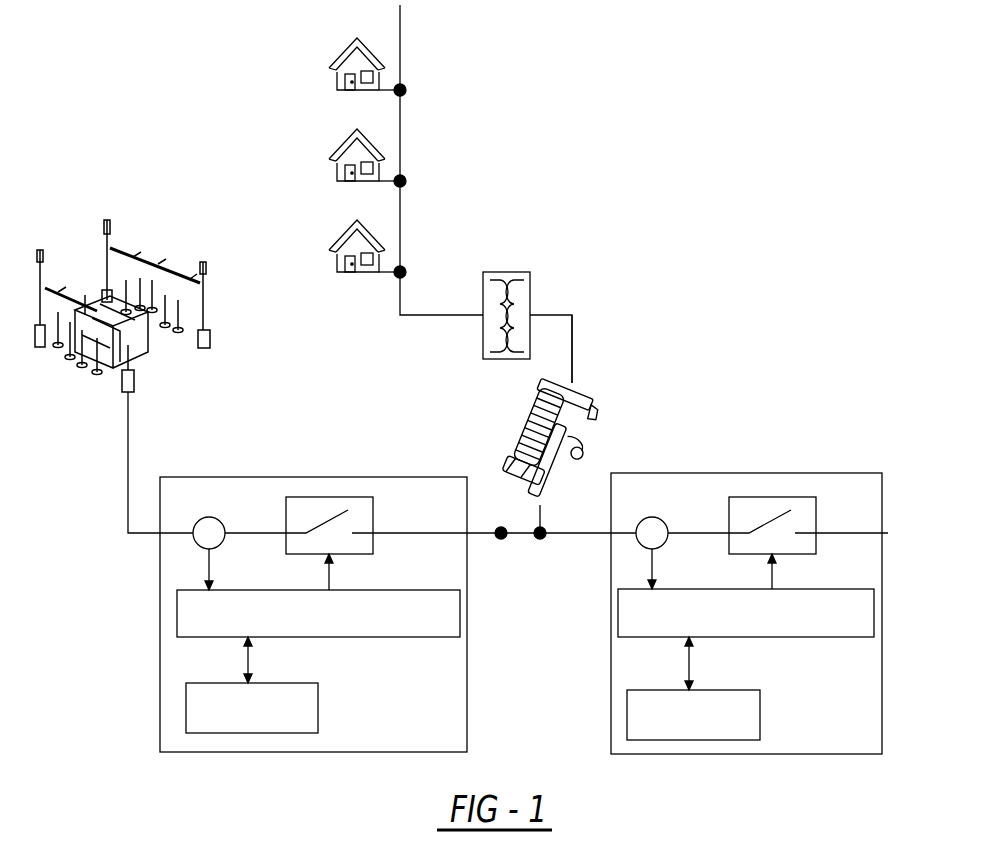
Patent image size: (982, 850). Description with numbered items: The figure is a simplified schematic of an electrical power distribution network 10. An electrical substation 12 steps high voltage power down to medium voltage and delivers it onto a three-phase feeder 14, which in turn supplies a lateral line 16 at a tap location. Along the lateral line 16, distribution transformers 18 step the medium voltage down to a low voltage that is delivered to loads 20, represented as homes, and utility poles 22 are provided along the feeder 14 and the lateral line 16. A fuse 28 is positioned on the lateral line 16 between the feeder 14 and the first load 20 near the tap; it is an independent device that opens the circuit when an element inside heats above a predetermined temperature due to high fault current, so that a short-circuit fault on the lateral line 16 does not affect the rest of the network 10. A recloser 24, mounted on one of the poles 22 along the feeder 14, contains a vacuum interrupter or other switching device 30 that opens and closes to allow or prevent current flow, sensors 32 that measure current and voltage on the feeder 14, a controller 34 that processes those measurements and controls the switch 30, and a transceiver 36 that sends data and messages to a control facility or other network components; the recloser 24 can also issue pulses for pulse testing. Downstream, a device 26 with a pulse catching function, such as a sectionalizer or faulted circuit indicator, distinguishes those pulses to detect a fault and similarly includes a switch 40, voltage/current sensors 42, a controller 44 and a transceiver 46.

The electrical power distribution network 10 is at (612, 76).
The electrical substation 12 is at (181, 206).
The three-phase feeder 14 is at (128, 434).
The lateral line 16 is at (572, 315).
The distribution transformer 18 is at (517, 272).
The load 20 is at (336, 79).
The utility pole 22 is at (402, 181).
The recloser 24 is at (256, 474).
The device having a pulse catching function 26 is at (703, 470).
The fuse 28 is at (588, 408).
The switching device 30 is at (318, 497).
The sensors 32 is at (205, 517).
The controller 34 is at (177, 614).
The transceiver 36 is at (186, 703).
The switch 40 is at (766, 496).
The voltage/current sensors 42 is at (644, 546).
The controller 44 is at (803, 637).
The transceiver 46 is at (627, 712).